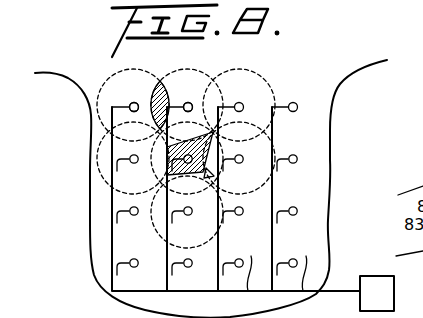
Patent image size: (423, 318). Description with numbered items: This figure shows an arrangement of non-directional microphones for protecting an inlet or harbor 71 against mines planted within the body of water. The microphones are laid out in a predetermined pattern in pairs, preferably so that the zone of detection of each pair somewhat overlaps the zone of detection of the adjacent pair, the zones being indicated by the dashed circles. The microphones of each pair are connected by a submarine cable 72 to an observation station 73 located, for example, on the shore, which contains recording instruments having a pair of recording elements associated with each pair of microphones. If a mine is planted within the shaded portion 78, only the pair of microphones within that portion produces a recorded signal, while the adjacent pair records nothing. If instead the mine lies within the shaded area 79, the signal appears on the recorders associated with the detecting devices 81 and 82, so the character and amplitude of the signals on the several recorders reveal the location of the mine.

The harbor 71 is at (315, 138).
The submarine cable 72 is at (112, 107).
The observation station 73 is at (377, 293).
The shaded portion 78 is at (207, 176).
The shaded area 79 is at (161, 80).
The detecting device 81 is at (136, 103).
The detecting device 82 is at (189, 103).